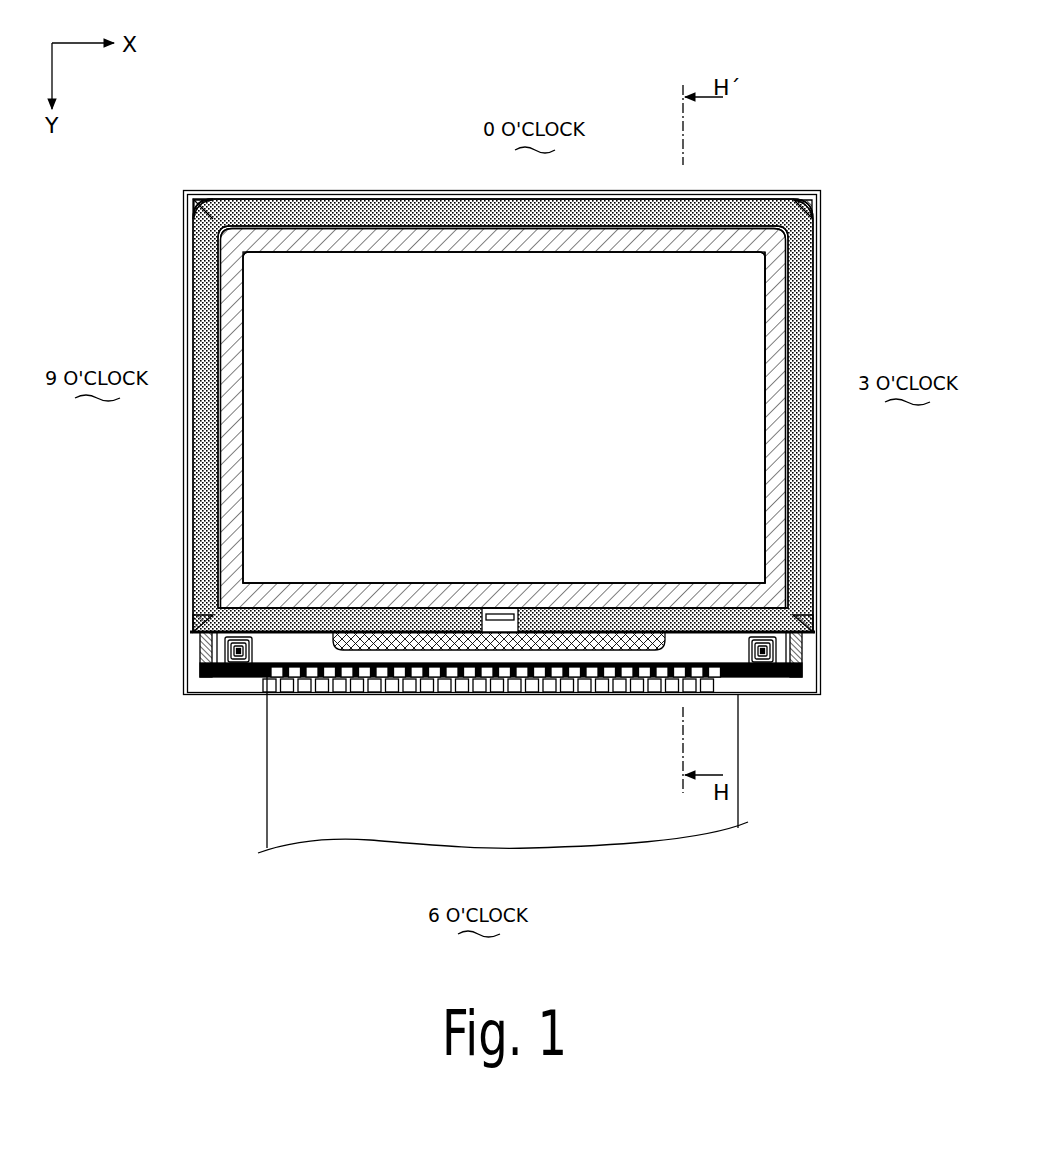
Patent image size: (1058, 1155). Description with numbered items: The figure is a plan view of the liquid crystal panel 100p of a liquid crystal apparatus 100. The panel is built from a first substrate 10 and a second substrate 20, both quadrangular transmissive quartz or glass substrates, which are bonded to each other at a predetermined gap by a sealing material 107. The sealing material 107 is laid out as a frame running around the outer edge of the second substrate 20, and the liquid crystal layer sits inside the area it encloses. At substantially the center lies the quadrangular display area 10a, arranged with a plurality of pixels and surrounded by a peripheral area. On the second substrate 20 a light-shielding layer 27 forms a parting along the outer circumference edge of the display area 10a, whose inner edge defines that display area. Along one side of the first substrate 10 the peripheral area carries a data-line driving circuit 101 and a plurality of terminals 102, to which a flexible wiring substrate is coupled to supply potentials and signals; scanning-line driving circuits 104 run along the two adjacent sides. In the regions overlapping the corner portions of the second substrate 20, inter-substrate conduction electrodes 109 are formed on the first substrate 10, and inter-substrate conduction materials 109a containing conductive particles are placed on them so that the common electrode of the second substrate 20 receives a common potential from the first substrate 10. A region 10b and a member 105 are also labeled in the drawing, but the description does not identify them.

The liquid crystal apparatus 100 is at (784, 73).
The liquid crystal panel 100p is at (729, 181).
The first substrate 10 is at (225, 700).
The display area 10a is at (337, 409).
The peripheral area 10b is at (842, 466).
The light-shielding layer 27 is at (710, 299).
The sealing material 107 is at (735, 341).
The scanning-line driving circuit 104 is at (227, 530).
The second substrate 20 is at (325, 633).
The inter-substrate conduction electrode 109 is at (496, 412).
The inter-substrate conduction material 109a is at (201, 200).
The data-line driving circuit 101 is at (733, 652).
The terminal 102 is at (512, 685).
The flexible printed circuit 105 is at (332, 820).